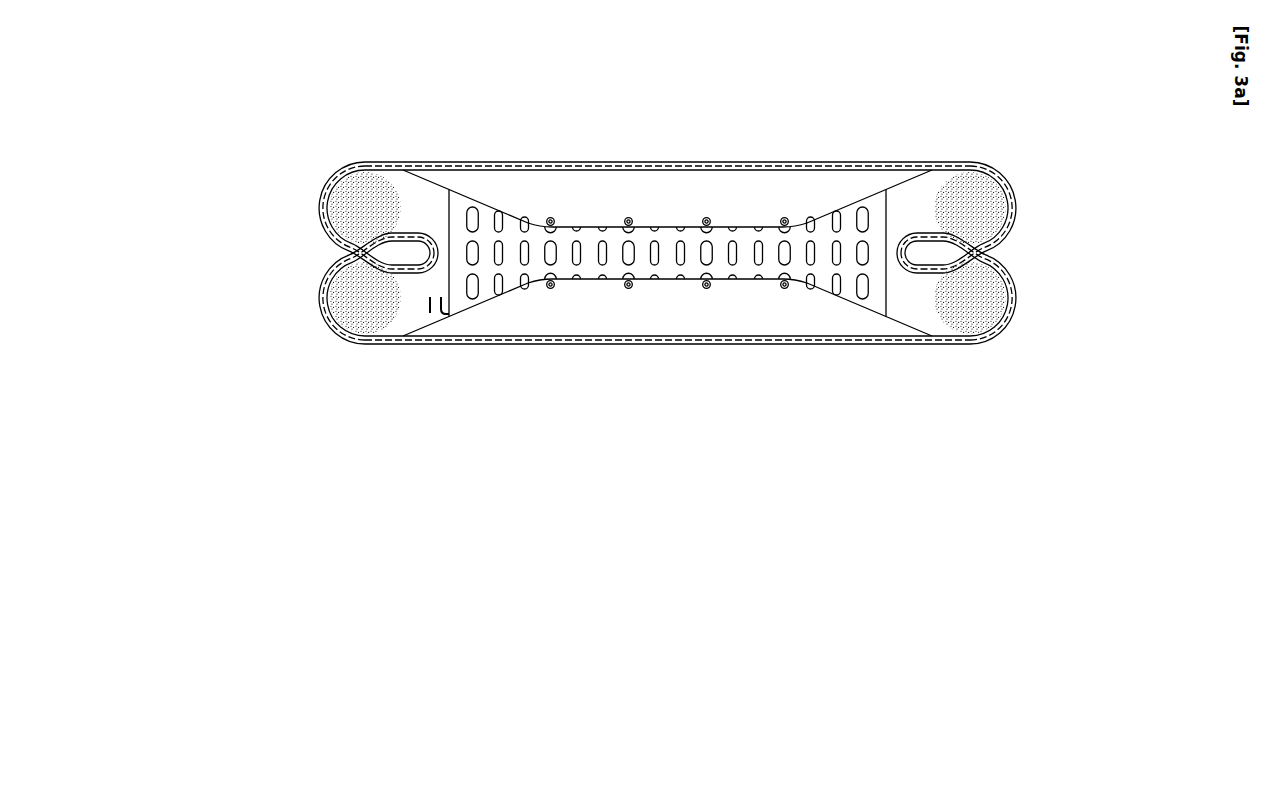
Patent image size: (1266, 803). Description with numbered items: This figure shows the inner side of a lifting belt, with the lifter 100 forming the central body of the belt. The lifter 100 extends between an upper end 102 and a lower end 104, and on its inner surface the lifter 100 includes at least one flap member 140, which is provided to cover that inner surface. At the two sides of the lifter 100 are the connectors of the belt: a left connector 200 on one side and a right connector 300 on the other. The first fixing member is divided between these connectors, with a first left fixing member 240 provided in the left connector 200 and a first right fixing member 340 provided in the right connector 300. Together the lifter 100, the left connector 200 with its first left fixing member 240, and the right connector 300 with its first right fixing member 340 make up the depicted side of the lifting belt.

The lifter 100 is at (583, 88).
The upper end 102 is at (665, 162).
The lower end 104 is at (670, 345).
The flap member 140 is at (597, 302).
The left connector 200 is at (1118, 236).
The first left fixing member 240 is at (970, 298).
The right connector 300 is at (217, 236).
The first right fixing member 340 is at (365, 298).